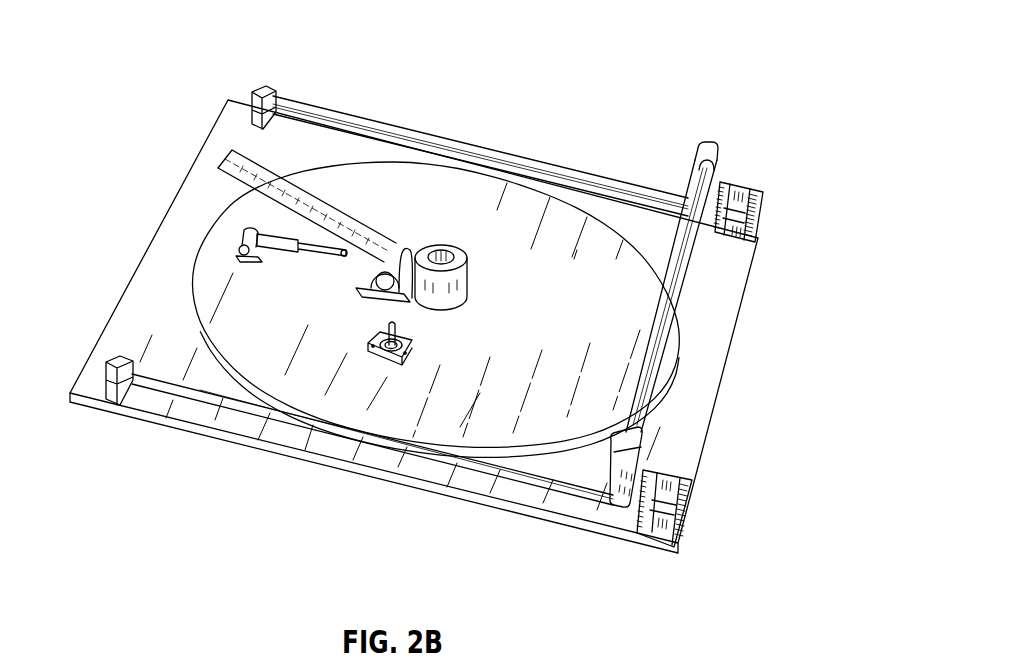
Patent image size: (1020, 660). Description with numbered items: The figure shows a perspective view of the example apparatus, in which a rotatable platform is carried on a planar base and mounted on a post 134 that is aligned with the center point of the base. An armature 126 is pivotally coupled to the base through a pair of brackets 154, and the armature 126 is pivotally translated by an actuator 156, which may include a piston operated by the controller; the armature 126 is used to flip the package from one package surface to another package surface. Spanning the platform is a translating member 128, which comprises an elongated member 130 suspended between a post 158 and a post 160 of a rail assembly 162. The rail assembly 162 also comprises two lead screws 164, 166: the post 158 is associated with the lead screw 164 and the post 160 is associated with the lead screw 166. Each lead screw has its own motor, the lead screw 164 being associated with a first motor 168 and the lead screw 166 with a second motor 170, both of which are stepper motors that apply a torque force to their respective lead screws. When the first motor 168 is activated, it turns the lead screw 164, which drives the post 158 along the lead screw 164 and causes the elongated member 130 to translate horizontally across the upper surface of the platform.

The armature 126 is at (337, 209).
The translating member 128 is at (783, 188).
The elongated member 130 is at (673, 288).
The post 134 is at (438, 256).
The brackets 154 is at (405, 243).
The actuator 156 is at (248, 225).
The post 158 is at (712, 145).
The post 160 is at (613, 507).
The rail assembly 162 is at (764, 216).
The lead screw 164 is at (323, 108).
The lead screw 166 is at (233, 398).
The first motor 168 is at (738, 184).
The second motor 170 is at (662, 522).